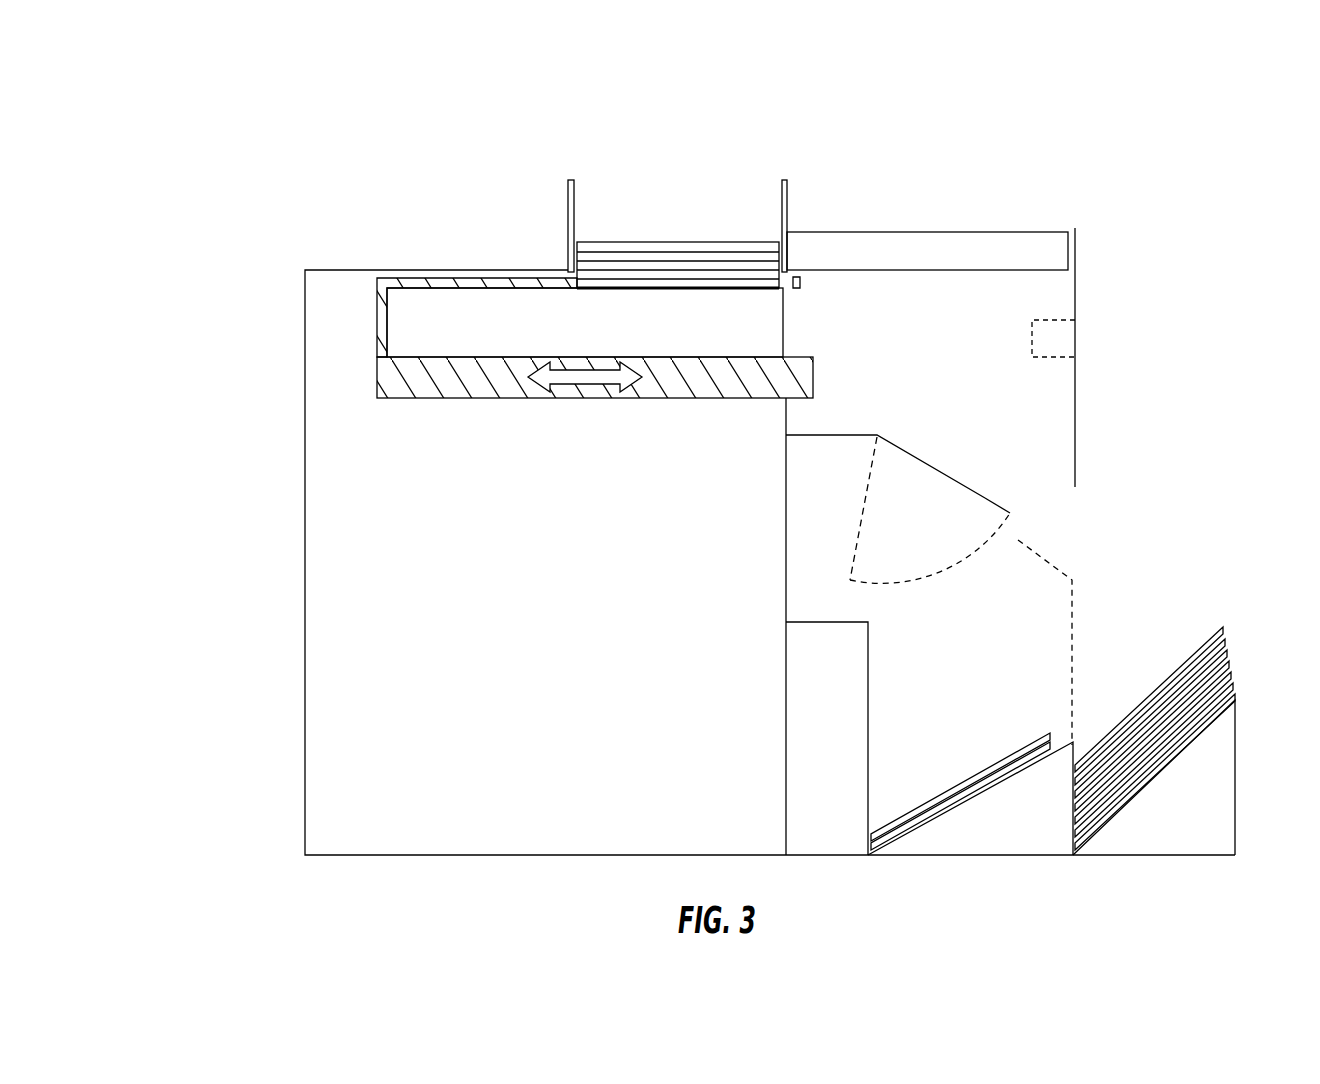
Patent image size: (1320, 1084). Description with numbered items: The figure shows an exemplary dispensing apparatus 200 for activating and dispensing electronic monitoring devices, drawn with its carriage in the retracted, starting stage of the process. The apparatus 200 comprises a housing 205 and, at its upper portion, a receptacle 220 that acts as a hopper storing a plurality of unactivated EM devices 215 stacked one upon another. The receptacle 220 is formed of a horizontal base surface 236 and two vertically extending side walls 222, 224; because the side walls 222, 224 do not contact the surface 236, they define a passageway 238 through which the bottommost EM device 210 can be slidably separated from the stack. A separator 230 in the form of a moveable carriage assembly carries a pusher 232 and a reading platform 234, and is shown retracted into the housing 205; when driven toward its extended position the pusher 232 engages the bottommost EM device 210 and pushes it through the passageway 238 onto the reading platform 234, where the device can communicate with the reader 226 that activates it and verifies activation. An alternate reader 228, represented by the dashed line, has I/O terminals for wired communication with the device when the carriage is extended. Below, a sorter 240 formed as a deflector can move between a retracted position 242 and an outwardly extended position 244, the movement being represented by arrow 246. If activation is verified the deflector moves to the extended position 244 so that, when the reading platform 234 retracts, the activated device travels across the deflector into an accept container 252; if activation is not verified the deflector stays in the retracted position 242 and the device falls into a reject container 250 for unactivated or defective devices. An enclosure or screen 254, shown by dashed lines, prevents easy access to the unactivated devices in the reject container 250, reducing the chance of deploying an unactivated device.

The dispensing apparatus 200 is at (230, 263).
The housing 205 is at (303, 552).
The EM device 210 is at (879, 481).
The plurality of unactivated EM devices 215 is at (690, 222).
The receptacle 220 is at (661, 203).
The side wall 222 is at (568, 212).
The side wall 224 is at (787, 207).
The reader 226 is at (1027, 232).
The reader 228 is at (1060, 337).
The separator 230 is at (347, 325).
The pusher 232 is at (542, 288).
The reading platform 234 is at (813, 373).
The horizontal base surface 236 is at (743, 280).
The passageway 238 is at (800, 283).
The sorter 240 is at (943, 472).
The retracted position 242 is at (852, 537).
The outwardly extended position 244 is at (1015, 513).
The arrow 246 is at (947, 582).
The reject container 250 is at (973, 830).
The accept container 252 is at (1180, 830).
The enclosure or screen 254 is at (1077, 647).